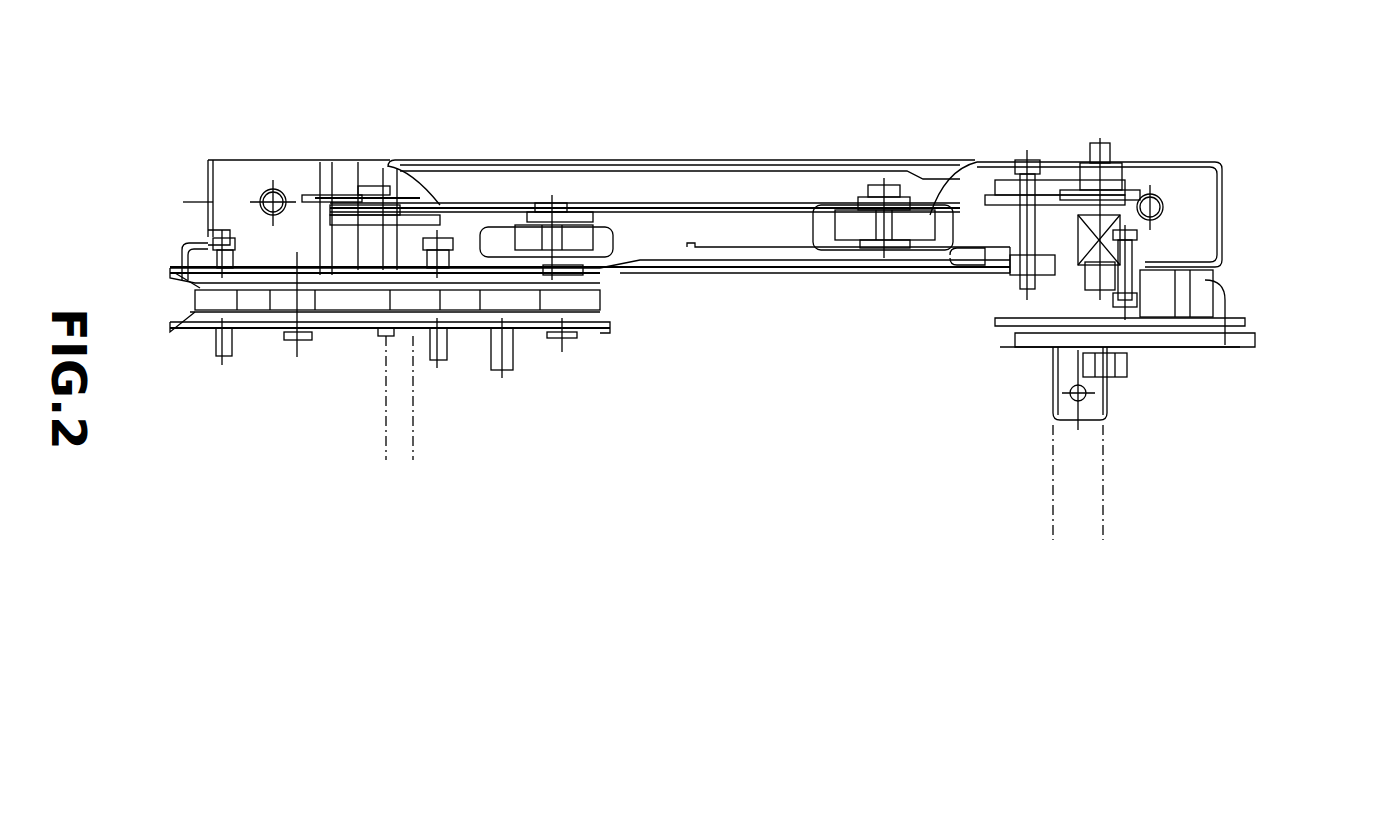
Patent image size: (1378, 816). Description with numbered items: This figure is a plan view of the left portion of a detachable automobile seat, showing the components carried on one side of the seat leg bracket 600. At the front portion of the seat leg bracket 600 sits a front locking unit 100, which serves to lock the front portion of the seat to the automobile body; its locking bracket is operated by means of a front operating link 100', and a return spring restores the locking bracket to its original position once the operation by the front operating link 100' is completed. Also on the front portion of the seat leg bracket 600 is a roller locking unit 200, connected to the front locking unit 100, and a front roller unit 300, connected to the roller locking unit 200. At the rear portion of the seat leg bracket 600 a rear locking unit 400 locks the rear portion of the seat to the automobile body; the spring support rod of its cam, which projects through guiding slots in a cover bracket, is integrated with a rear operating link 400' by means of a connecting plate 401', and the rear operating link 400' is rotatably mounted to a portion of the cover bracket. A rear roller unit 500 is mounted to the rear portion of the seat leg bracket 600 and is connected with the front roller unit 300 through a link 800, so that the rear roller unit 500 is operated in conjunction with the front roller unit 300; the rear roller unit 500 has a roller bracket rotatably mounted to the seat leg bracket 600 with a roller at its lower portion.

The front locking unit 100 is at (1149, 419).
The front operating link 100' is at (1019, 482).
The roller locking unit 200 is at (519, 196).
The front roller unit 300 is at (828, 190).
The rear locking unit 400 is at (390, 299).
The rear operating link 400' is at (456, 421).
The connecting plate 401' is at (344, 383).
The rear roller unit 500 is at (1180, 229).
The seat leg bracket 600 is at (777, 273).
The link 800 is at (677, 160).